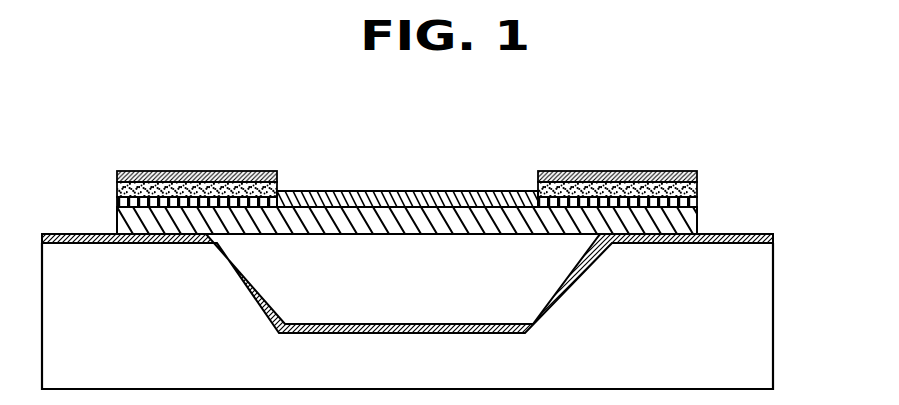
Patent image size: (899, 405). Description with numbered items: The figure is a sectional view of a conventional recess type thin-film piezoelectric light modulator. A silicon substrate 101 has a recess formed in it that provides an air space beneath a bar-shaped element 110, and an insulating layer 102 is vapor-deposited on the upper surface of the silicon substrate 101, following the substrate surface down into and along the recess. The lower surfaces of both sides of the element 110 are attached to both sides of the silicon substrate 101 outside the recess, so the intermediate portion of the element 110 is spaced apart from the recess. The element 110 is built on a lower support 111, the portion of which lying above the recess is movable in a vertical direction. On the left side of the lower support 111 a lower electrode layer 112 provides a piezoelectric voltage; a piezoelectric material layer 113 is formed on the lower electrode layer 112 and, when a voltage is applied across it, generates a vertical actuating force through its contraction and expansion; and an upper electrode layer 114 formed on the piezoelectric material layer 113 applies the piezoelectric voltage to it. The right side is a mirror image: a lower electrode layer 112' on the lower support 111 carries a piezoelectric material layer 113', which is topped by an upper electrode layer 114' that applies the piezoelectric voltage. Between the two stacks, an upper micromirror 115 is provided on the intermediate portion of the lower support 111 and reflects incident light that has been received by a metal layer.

The silicon substrate 101 is at (773, 313).
The insulating layer 102 is at (773, 236).
The element 110 is at (485, 198).
The lower support 111 is at (697, 215).
The lower electrode layer 112 is at (151, 207).
The lower electrode layer 112' is at (667, 196).
The piezoelectric material layer 113 is at (151, 185).
The piezoelectric material layer 113' is at (667, 179).
The upper electrode layer 114 is at (151, 166).
The upper electrode layer 114' is at (617, 142).
The upper micromirror 115 is at (402, 191).